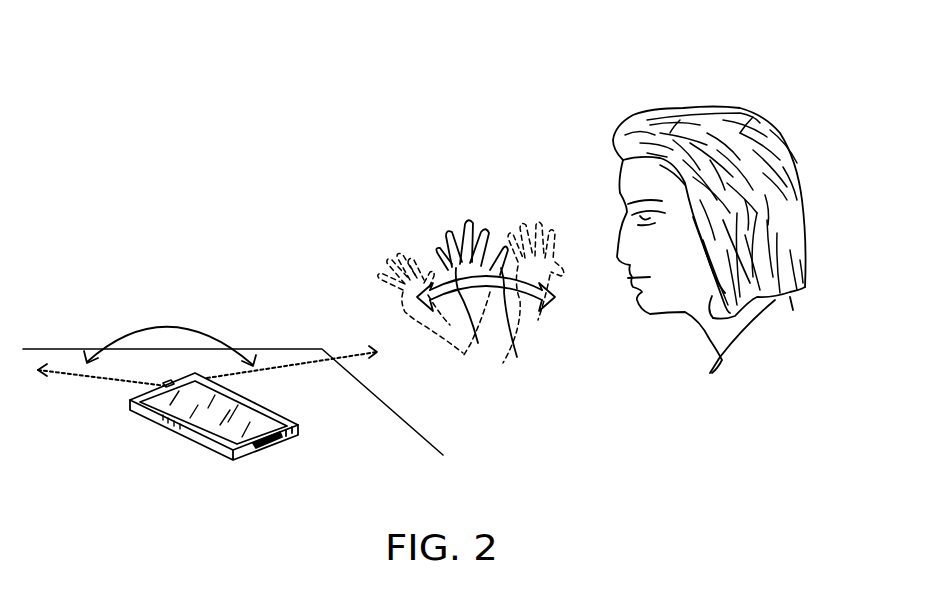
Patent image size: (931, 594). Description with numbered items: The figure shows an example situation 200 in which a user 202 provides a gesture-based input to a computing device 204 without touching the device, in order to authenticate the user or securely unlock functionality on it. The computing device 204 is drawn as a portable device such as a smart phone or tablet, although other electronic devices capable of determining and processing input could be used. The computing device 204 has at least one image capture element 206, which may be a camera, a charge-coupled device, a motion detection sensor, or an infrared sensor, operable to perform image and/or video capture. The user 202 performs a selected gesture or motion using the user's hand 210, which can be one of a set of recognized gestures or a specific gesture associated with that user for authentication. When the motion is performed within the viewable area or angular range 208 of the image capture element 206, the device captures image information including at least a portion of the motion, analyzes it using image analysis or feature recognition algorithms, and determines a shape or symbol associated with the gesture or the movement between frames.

The example situation 200 is at (118, 147).
The user 202 is at (576, 161).
The computing device 204 is at (132, 407).
The image capture element 206 is at (167, 387).
The viewable area or angular range 208 is at (170, 334).
The user's hand 210 is at (400, 226).